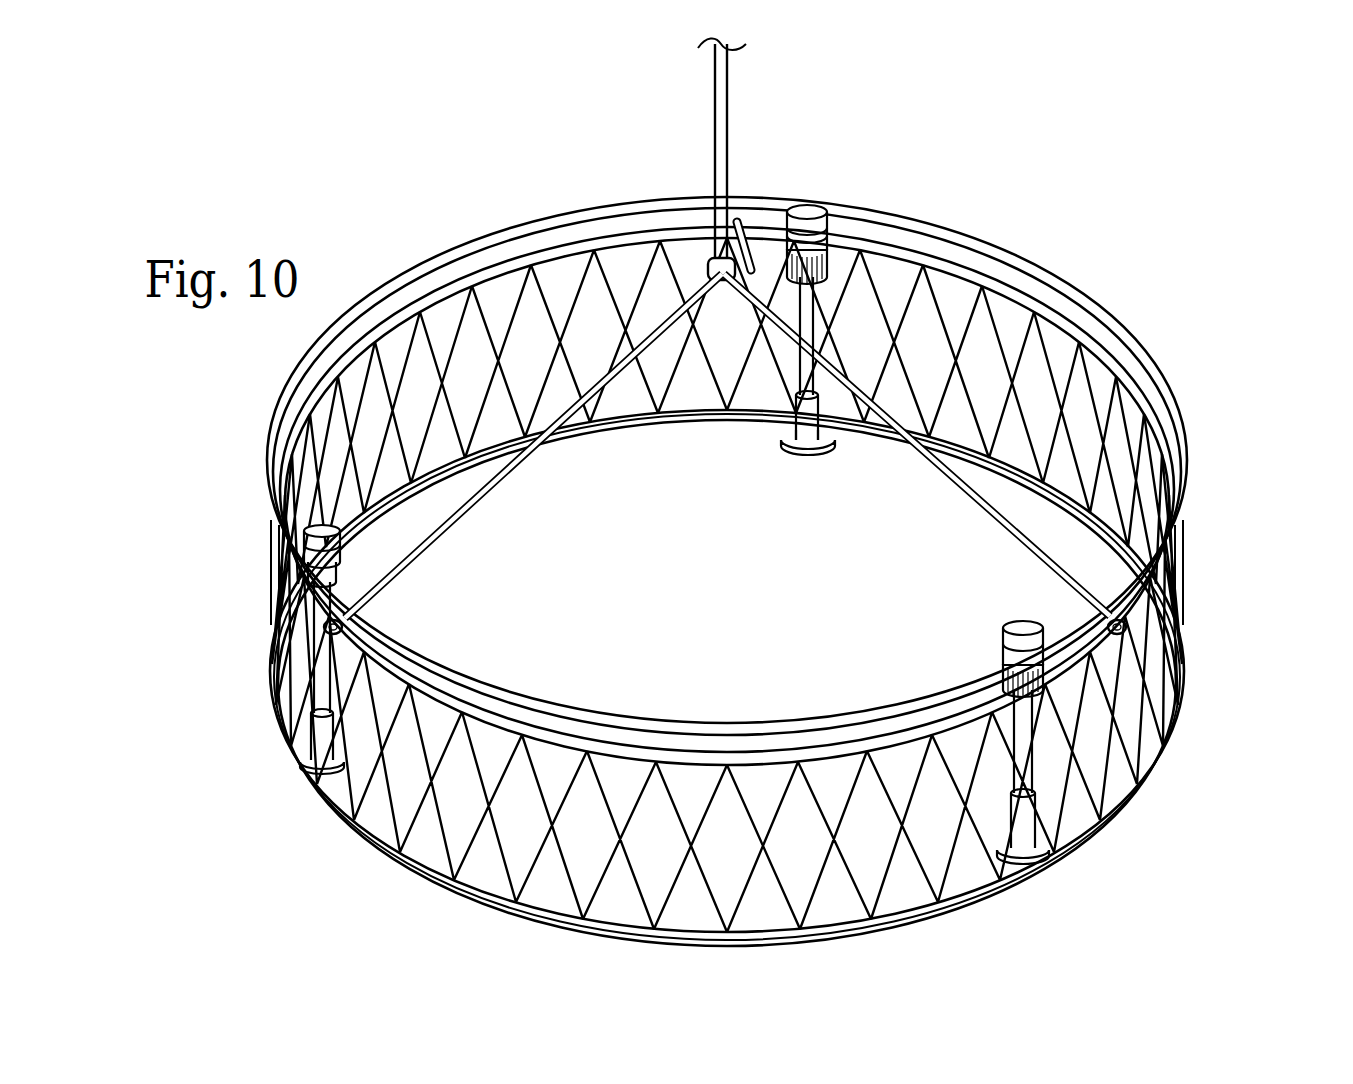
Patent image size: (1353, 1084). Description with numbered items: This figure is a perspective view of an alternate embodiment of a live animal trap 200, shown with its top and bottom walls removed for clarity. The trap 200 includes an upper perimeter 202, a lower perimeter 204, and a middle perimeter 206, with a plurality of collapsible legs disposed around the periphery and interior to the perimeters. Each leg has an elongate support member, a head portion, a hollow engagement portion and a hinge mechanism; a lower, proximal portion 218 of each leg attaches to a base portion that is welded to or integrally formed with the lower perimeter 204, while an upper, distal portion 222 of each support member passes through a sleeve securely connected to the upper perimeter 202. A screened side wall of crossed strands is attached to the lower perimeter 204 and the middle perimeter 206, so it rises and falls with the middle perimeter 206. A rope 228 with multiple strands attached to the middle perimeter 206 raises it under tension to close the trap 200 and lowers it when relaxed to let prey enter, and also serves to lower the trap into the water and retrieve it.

The trap 200 is at (1109, 152).
The upper perimeter 202 is at (600, 207).
The lower perimeter 204 is at (298, 752).
The middle perimeter 206 is at (625, 748).
The proximal portion 218 is at (800, 425).
The distal portion 222 is at (838, 364).
The rope 228 is at (718, 108).